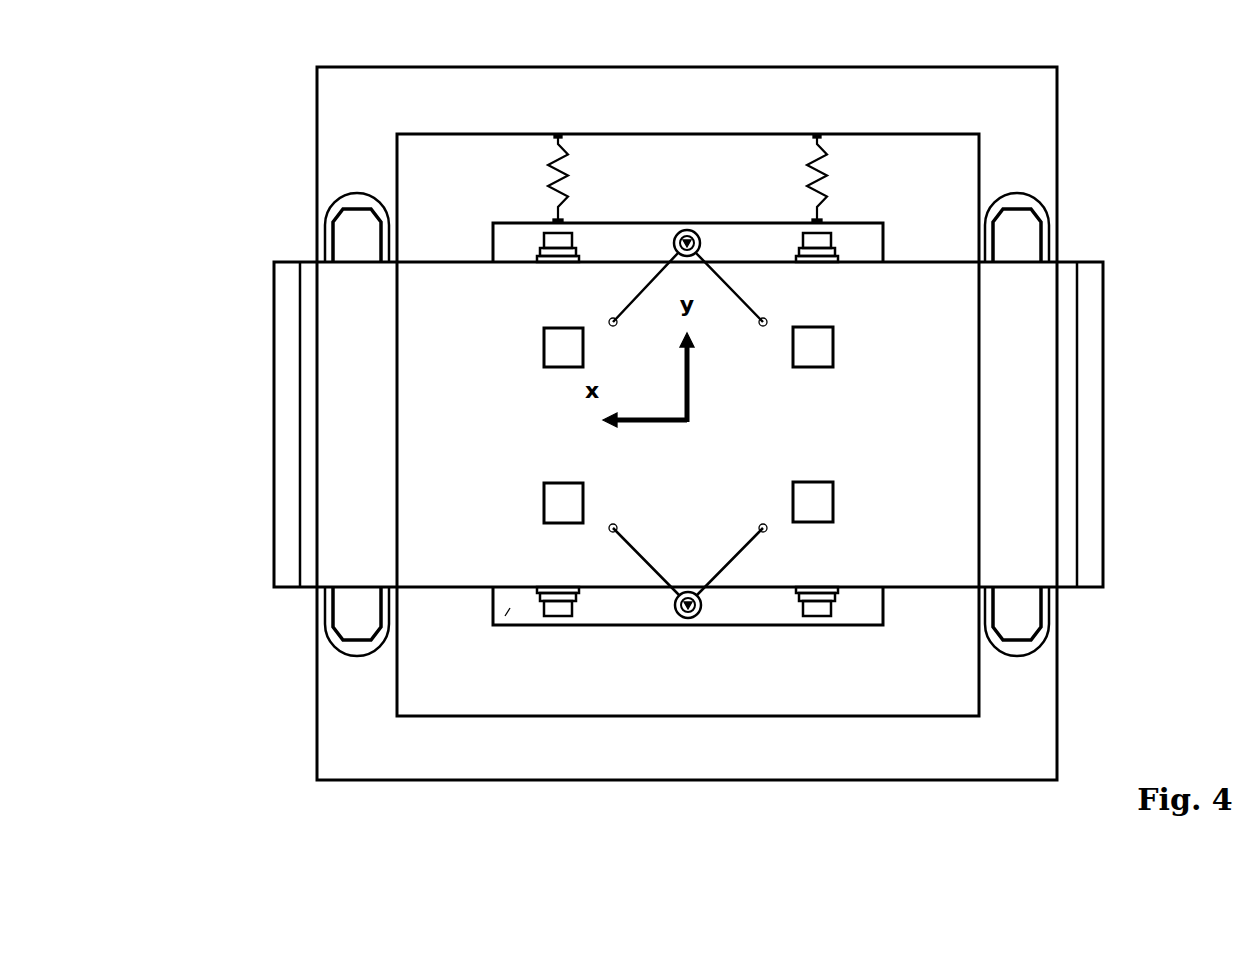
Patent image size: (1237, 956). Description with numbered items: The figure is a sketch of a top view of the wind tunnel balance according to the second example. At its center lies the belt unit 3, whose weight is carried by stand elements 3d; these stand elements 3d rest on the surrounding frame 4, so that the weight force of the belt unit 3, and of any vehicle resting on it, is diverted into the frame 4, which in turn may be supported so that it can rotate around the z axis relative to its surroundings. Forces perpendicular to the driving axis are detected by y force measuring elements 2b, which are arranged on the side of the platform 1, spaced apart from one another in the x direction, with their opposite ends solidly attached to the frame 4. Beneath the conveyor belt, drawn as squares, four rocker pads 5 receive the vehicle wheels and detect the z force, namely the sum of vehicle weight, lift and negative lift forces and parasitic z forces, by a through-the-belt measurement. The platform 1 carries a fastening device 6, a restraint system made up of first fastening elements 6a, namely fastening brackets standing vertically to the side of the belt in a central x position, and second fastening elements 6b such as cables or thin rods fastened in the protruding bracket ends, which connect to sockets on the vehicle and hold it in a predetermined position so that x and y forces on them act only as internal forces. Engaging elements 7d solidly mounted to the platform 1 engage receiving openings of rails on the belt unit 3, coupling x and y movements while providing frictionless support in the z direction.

The platform 1 is at (508, 612).
The y force measuring element 2b is at (570, 157).
The belt unit 3 is at (1037, 490).
The stand element 3d is at (343, 243).
The frame 4 is at (335, 160).
The rocker pad 5 is at (557, 353).
The fastening device 6 is at (670, 242).
The first fastening element 6a is at (827, 232).
The second fastening element 6b is at (657, 275).
The engaging element 7d is at (558, 237).